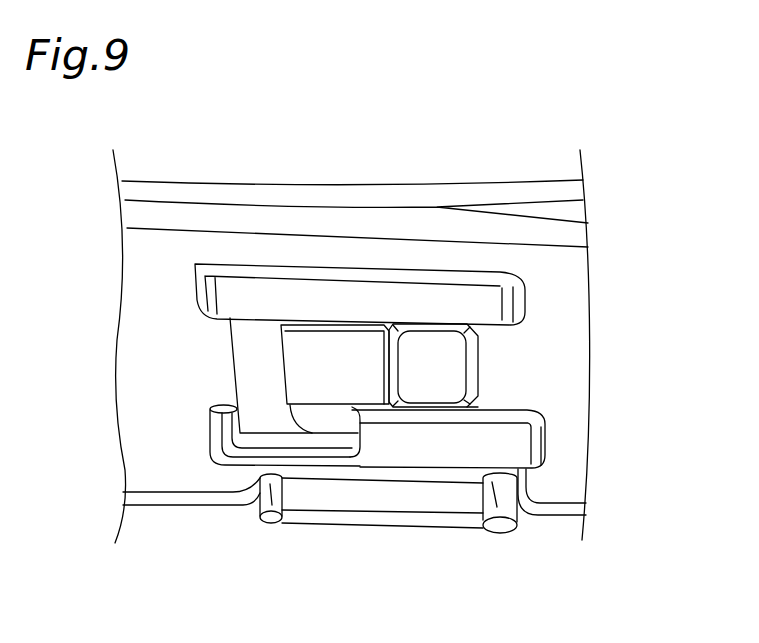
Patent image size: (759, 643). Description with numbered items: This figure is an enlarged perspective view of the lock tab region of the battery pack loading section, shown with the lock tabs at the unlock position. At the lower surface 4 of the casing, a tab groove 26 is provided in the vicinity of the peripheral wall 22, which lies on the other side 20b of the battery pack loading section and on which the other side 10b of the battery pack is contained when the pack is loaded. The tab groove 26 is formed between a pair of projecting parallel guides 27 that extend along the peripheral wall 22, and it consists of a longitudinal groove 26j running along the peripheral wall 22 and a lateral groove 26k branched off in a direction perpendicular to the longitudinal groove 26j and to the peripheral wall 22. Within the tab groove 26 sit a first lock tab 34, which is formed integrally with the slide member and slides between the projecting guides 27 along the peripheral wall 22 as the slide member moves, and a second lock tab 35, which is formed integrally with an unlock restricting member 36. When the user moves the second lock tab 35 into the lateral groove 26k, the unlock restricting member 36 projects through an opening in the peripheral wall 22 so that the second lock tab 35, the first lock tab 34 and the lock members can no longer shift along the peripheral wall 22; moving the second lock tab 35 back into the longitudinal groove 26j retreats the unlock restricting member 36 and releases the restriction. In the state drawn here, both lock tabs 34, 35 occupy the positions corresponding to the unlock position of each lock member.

The lower surface 4 is at (164, 248).
The second lock tab 35 is at (327, 345).
The first lock tab 34 is at (423, 343).
The projecting parallel guides 27 is at (520, 298).
The tab groove 26 is at (500, 359).
The longitudinal groove 26j is at (478, 407).
The lateral groove 26k is at (347, 428).
The unlock restricting member 36 is at (322, 430).
The peripheral wall 22 is at (543, 508).
The other side of the battery pack 10b is at (173, 503).
The other side of the battery pack loading section 20b is at (148, 493).